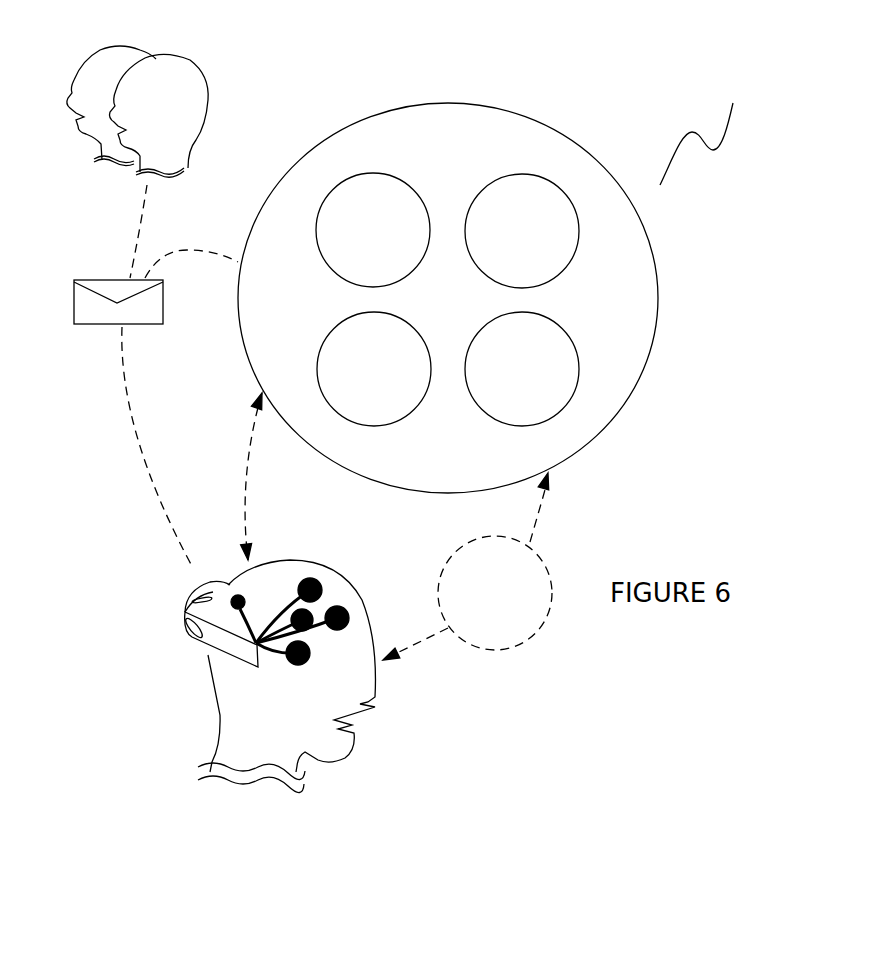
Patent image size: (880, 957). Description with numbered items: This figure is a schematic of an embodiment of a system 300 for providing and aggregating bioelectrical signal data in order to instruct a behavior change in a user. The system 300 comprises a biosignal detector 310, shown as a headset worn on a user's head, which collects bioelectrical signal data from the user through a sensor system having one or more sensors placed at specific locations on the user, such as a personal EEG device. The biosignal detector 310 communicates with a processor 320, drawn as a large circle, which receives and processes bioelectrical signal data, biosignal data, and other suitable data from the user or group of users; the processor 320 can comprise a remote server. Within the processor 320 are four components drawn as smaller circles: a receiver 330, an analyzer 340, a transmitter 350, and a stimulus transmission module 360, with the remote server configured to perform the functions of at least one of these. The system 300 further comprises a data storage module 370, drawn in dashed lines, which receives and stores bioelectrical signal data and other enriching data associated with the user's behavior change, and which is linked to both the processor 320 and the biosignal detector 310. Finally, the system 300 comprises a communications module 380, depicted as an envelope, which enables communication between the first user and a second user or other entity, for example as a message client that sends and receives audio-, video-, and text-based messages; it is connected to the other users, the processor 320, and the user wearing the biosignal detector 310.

The system 300 is at (707, 126).
The biosignal detector 310 is at (178, 530).
The processor 320 is at (448, 298).
The receiver 330 is at (373, 230).
The analyzer 340 is at (522, 231).
The transmitter 350 is at (374, 369).
The stimulus transmission module 360 is at (522, 369).
The data storage module 370 is at (467, 566).
The communications module 380 is at (90, 307).